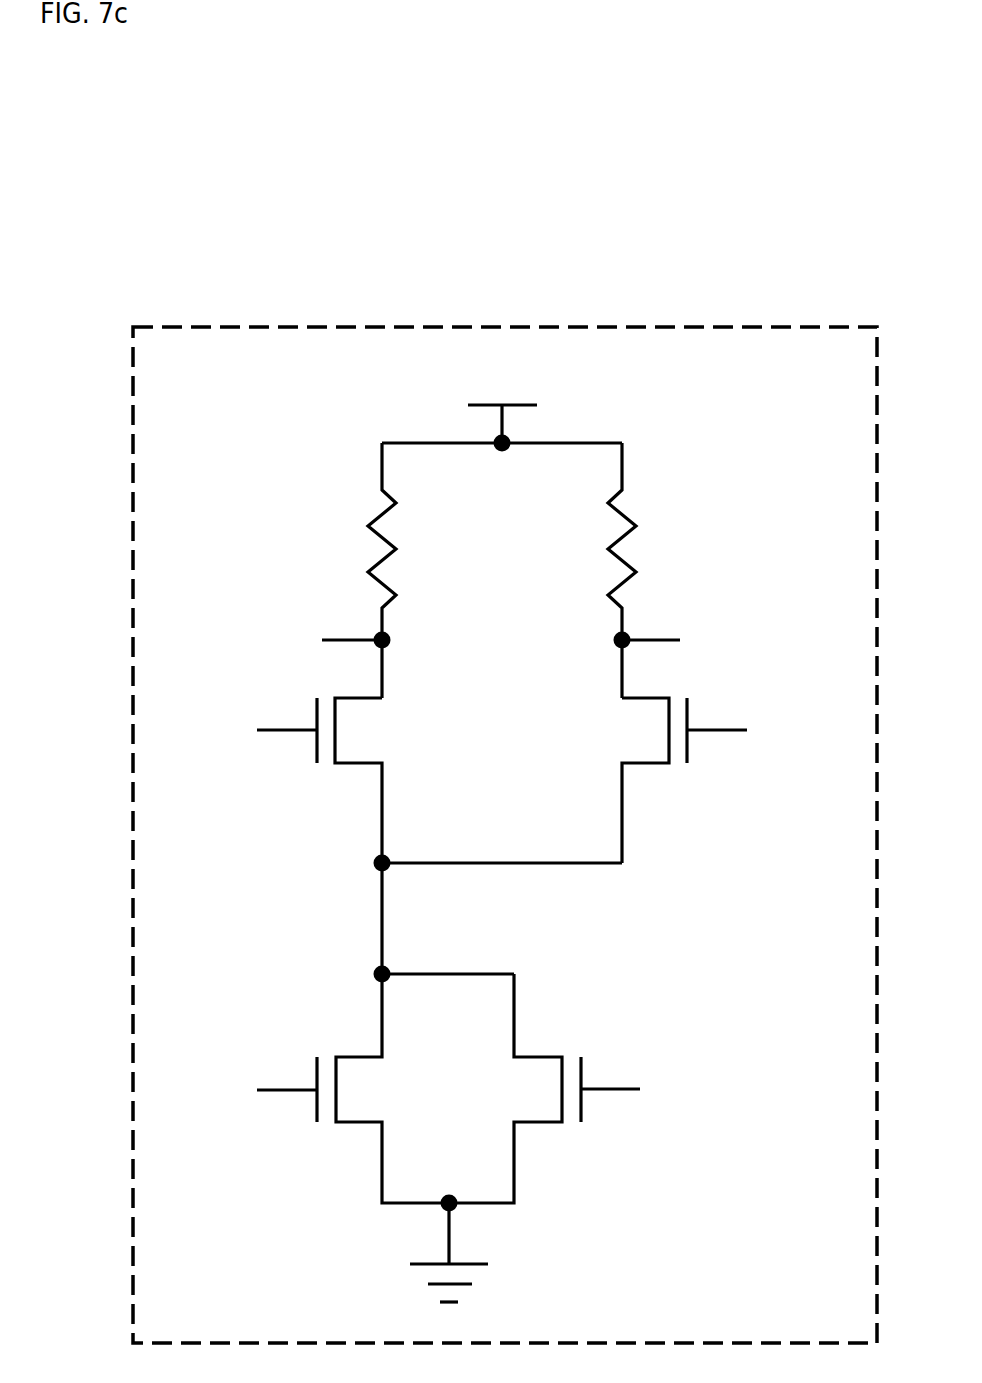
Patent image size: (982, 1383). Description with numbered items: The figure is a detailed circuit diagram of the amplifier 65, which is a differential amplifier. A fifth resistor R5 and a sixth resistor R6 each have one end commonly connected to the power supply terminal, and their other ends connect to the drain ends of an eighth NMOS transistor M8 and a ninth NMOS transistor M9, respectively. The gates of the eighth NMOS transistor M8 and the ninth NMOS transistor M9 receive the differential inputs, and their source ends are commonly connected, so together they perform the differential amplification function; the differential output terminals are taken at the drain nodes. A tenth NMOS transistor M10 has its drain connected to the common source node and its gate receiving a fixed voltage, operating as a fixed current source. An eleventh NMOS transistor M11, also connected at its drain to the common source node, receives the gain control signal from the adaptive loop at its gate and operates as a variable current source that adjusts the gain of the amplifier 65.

The amplifier 65 is at (652, 327).
The fifth resistor R5 is at (354, 570).
The sixth resistor R6 is at (647, 570).
The eighth NMOS transistor M8 is at (319, 780).
The ninth NMOS transistor M9 is at (684, 780).
The tenth NMOS transistor M10 is at (353, 1088).
The eleventh NMOS transistor M11 is at (544, 1088).